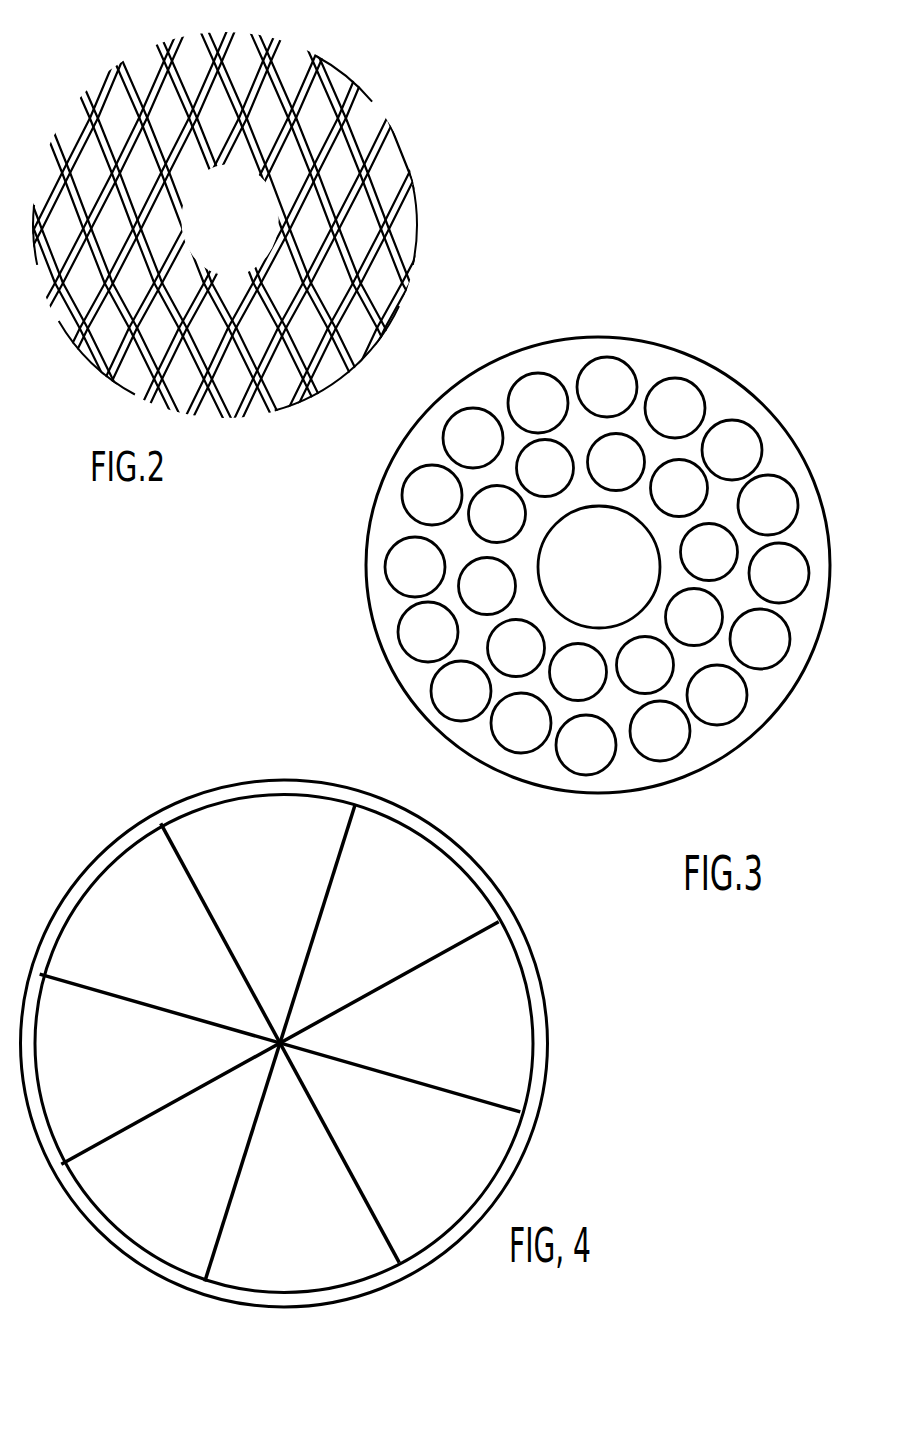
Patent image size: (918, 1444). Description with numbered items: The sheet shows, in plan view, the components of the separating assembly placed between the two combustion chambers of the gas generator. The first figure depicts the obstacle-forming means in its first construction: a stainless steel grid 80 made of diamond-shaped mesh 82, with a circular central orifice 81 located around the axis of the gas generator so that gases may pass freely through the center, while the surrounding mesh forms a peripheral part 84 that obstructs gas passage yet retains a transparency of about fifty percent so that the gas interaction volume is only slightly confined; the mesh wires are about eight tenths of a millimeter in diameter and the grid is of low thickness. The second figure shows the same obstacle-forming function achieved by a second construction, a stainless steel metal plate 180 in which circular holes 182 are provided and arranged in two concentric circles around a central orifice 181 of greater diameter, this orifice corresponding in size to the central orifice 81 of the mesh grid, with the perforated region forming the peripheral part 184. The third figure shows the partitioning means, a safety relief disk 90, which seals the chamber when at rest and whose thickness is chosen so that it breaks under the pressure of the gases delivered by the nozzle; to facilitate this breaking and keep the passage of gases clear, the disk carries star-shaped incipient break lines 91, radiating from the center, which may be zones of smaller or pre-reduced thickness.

In FIG. 2, the grid 80 is at (272, 217).
In FIG. 2, the central orifice 81 is at (243, 218).
In FIG. 2, the diamond-shaped mesh 82 is at (358, 230).
In FIG. 2, the peripheral part 84 is at (153, 88).
In FIG. 3, the metal plate 180 is at (598, 539).
In FIG. 3, the central orifice 181 is at (618, 556).
In FIG. 3, the circular holes 182 is at (465, 432).
In FIG. 3, the peripheral part 184 is at (632, 767).
In FIG. 4, the safety relief disk 90 is at (332, 1043).
In FIG. 4, the star-shaped incipient break lines 91 is at (448, 956).